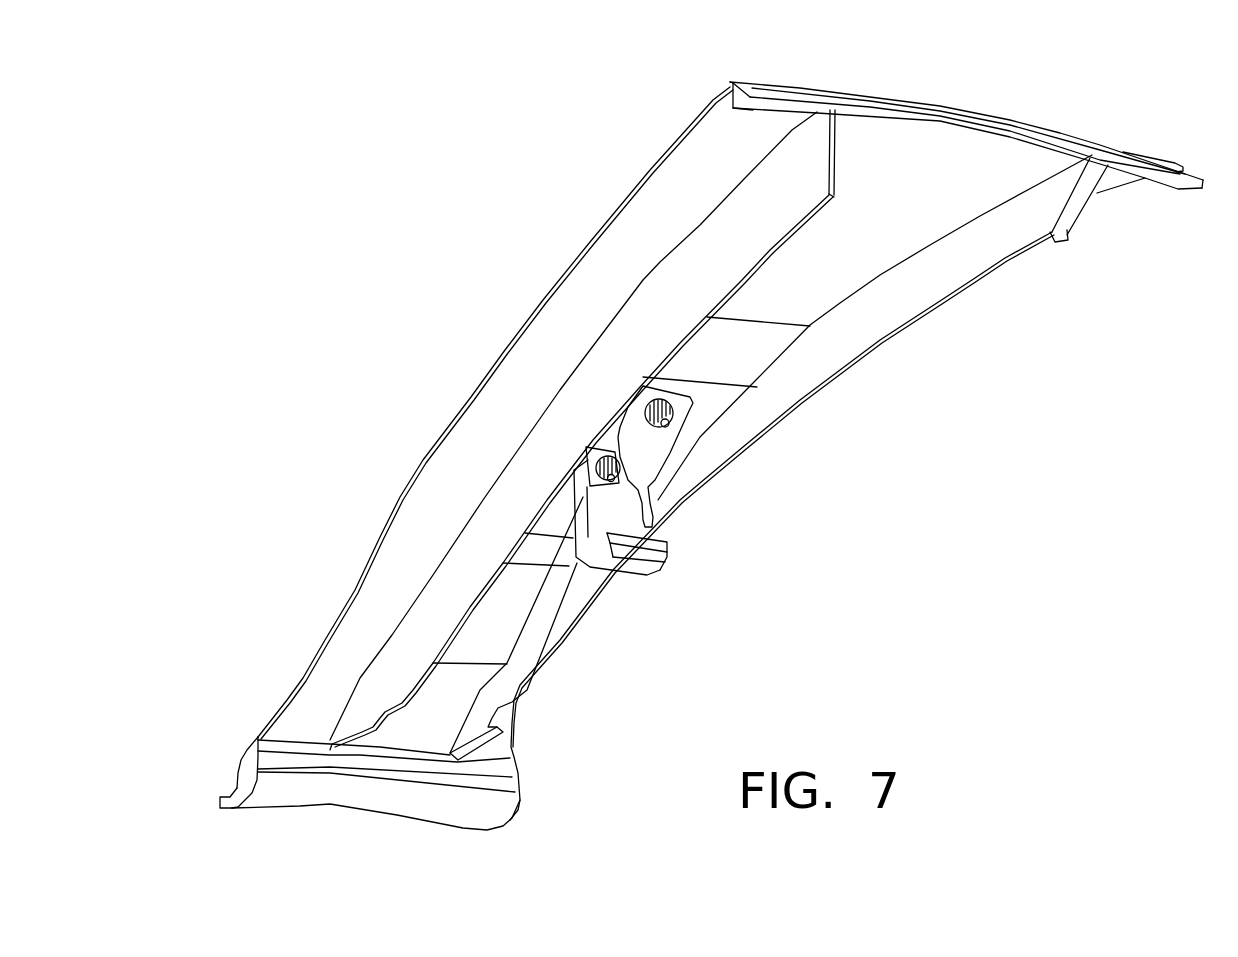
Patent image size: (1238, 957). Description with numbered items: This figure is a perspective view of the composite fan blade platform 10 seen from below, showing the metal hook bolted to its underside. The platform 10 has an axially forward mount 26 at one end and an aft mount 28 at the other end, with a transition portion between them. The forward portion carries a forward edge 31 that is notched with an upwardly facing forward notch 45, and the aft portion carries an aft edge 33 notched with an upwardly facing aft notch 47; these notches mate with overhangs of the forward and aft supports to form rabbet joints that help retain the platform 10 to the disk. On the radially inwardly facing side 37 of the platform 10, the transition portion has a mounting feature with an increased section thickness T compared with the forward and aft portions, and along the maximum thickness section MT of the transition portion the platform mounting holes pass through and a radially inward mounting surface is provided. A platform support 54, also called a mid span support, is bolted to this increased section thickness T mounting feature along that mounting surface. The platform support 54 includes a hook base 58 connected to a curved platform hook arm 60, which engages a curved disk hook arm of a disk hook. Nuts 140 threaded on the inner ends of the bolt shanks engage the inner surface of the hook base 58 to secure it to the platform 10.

The fan blade platform 10 is at (840, 478).
The forward mount 26 is at (231, 808).
The aft mount 28 is at (729, 91).
The forward edge 31 is at (257, 737).
The aft edge 33 is at (752, 90).
The radially inwardly facing side 37 is at (933, 210).
The forward notch 45 is at (235, 797).
The aft notch 47 is at (797, 91).
The platform support 54 is at (583, 507).
The hook base 58 is at (664, 391).
The platform hook arm 60 is at (627, 572).
The nut 140 is at (597, 455).
The increased section thickness T is at (713, 328).
The maximum thickness section MT is at (703, 407).